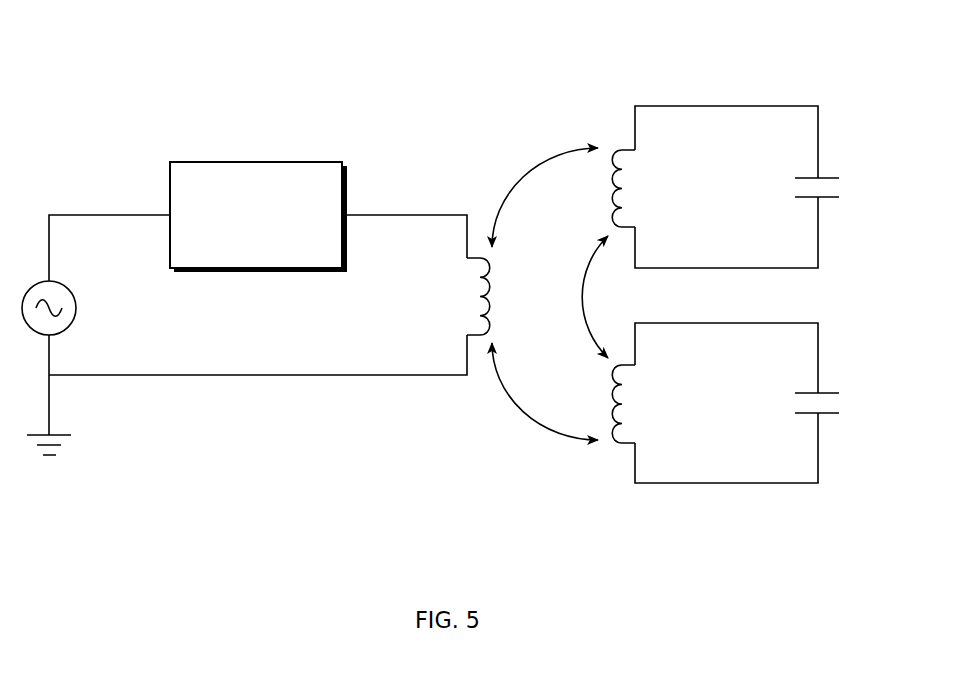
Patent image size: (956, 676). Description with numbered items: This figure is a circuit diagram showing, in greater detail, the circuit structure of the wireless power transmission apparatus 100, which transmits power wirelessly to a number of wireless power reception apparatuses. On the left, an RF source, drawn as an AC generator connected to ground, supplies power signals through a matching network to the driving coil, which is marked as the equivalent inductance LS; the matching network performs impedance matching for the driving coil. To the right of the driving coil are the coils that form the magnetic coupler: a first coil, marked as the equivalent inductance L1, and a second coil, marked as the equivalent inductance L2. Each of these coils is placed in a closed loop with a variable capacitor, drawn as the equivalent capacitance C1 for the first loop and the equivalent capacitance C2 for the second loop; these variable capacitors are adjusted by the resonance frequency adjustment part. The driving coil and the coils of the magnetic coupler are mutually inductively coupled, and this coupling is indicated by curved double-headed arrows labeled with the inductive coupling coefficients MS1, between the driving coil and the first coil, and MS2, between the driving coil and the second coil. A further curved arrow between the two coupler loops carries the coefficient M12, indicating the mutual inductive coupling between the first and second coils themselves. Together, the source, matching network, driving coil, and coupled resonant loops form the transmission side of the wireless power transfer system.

The wireless power transmission apparatus 100 is at (623, 55).
The equivalent inductance of the driving coil LS is at (464, 296).
The equivalent inductance of the first coil L1 is at (640, 188).
The equivalent capacitance of the first variable capacitor C1 is at (837, 187).
The equivalent inductance of the second coil L2 is at (640, 404).
The equivalent capacitance of the second variable capacitor C2 is at (837, 403).
The inductive coupling coefficient between the driving coil and the first coil MS1 is at (534, 193).
The inductive coupling coefficient between the driving coil and the second coil MS2 is at (534, 391).
The inductive coupling coefficient between the first and second coils M12 is at (614, 297).